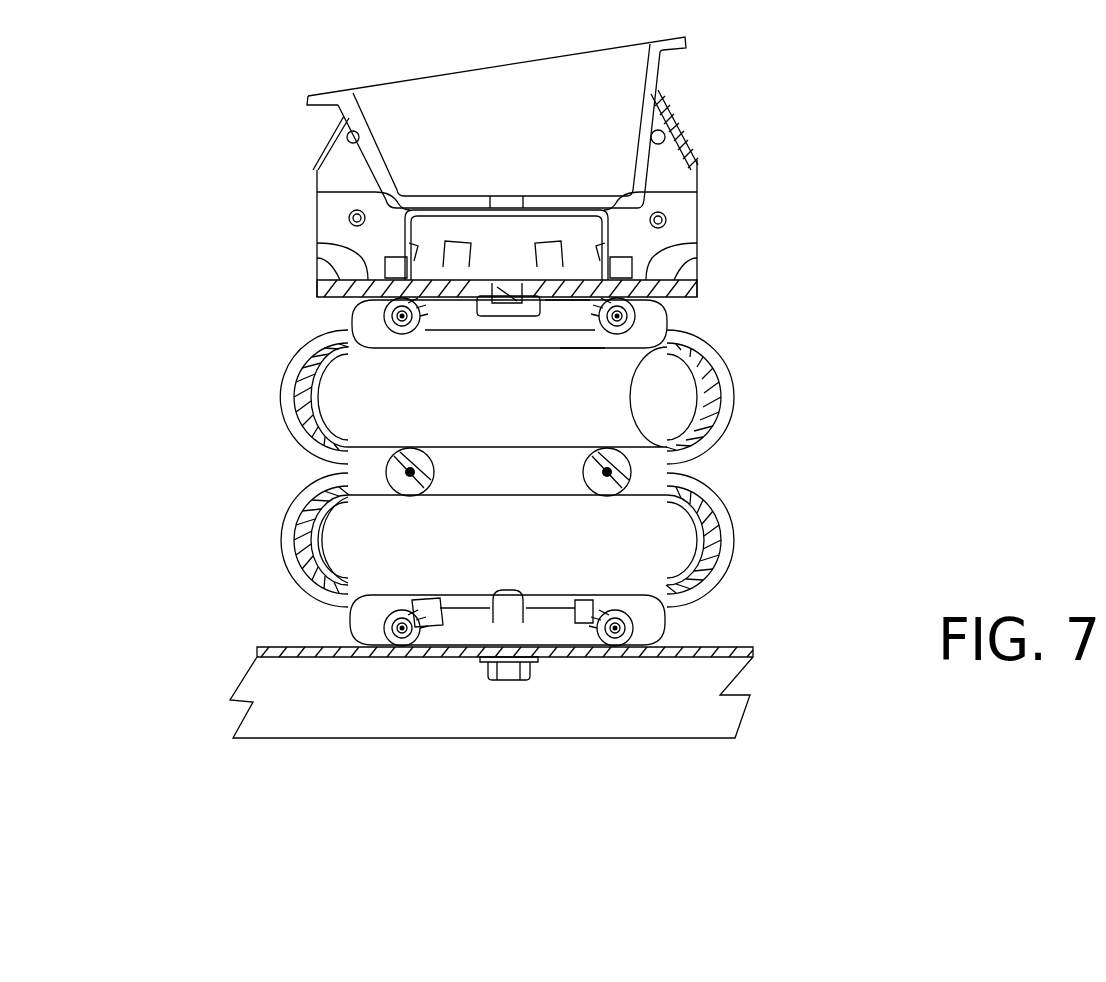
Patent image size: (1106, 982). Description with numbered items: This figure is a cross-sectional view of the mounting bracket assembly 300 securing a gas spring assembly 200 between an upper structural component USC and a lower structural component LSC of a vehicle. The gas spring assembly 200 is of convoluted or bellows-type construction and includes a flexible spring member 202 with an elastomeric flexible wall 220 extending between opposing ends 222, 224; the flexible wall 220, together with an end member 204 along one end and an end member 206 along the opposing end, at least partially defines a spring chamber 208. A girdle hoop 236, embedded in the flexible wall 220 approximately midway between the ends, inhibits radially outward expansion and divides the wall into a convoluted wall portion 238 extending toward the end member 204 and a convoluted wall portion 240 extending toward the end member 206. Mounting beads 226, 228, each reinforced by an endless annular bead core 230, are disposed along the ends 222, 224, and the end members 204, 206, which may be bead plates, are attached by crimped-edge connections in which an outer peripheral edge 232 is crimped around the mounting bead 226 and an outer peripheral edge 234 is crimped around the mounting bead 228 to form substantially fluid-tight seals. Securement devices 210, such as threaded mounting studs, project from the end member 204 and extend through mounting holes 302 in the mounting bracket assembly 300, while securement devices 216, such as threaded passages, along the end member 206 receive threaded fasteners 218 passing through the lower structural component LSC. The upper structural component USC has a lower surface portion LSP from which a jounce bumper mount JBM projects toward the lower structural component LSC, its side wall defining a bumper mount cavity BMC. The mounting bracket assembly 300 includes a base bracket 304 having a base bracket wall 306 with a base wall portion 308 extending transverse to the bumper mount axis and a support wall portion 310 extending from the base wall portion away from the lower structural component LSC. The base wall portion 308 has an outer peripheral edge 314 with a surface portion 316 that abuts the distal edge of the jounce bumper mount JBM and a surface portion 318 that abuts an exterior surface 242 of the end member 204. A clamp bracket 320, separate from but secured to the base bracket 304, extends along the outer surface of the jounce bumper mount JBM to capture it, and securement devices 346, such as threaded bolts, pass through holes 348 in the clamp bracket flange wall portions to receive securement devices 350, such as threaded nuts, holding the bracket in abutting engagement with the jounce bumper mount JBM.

The gas spring assembly 200 is at (785, 465).
The flexible spring member 202 is at (752, 524).
The end member 204 is at (345, 302).
The end member 206 is at (346, 623).
The spring chamber 208 is at (344, 524).
The securement devices 210 is at (506, 316).
The securement devices 216 is at (525, 607).
The threaded fasteners 218 is at (508, 672).
The flexible wall 220 is at (278, 550).
The end 222 is at (586, 366).
The end 224 is at (599, 570).
The mounting bead 226 is at (618, 330).
The mounting bead 228 is at (443, 592).
The bead core 230 is at (402, 330).
The outer peripheral edge 232 is at (637, 317).
The outer peripheral edge 234 is at (665, 623).
The girdle hoop 236 is at (430, 486).
The convoluted wall portion 238 is at (738, 390).
The convoluted wall portion 240 is at (735, 548).
The exterior surface 242 is at (563, 300).
The mounting bracket assembly 300 is at (274, 175).
The mounting holes 302 is at (492, 290).
The base bracket 304 is at (304, 297).
The base bracket wall 306 is at (655, 256).
The base wall portion 308 is at (317, 260).
The support wall portion 310 is at (338, 155).
The outer peripheral edge 314 is at (700, 287).
The surface portion 316 is at (317, 243).
The surface portion 318 is at (320, 357).
The clamp bracket 320 is at (703, 226).
The securement devices 346 is at (363, 201).
The holes 348 is at (357, 218).
The securement devices 350 is at (658, 220).
The upper structural component USC is at (670, 73).
The jounce bumper mount JBM is at (622, 213).
The bumper mount cavity BMC is at (478, 225).
The lower surface portion LSP is at (565, 200).
The lower structural component LSC is at (380, 760).